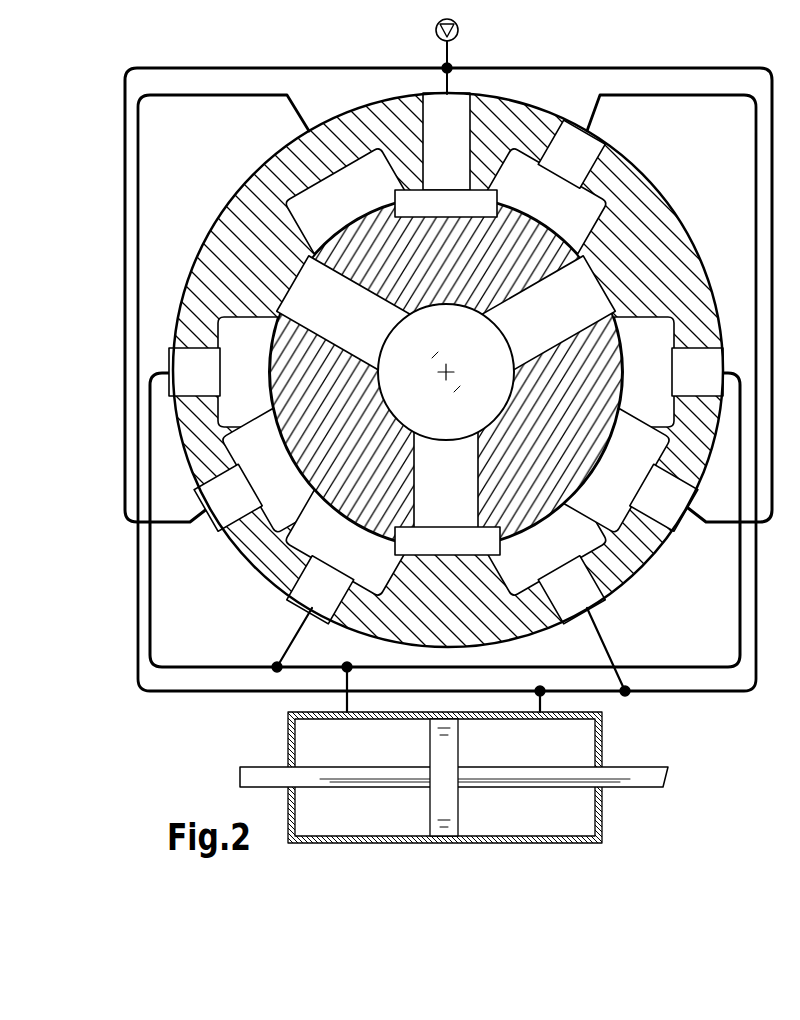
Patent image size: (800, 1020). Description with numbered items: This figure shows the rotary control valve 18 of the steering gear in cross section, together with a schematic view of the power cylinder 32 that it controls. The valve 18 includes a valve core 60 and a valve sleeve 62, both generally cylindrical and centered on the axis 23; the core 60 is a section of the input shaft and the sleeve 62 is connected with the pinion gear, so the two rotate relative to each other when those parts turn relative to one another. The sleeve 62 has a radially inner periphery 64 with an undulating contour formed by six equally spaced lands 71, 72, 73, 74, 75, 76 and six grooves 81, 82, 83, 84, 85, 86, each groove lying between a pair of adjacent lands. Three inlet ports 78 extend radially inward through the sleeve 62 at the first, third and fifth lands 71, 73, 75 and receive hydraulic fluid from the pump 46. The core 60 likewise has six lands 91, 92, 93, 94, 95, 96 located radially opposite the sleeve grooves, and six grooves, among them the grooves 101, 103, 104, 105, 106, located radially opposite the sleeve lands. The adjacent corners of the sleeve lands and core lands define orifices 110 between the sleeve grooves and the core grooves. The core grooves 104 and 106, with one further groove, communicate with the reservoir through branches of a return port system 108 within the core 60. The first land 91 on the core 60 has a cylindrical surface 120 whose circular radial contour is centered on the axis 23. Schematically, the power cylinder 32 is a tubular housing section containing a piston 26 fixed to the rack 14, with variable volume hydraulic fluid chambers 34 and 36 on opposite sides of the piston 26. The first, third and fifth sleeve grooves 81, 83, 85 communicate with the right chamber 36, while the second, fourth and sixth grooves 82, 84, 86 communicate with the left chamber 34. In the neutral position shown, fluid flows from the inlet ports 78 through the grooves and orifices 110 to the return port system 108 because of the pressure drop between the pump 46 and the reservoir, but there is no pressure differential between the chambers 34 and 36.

The rack 14 is at (290, 768).
The valve 18 is at (196, 130).
The axis 23 is at (452, 370).
The piston 26 is at (446, 822).
The power cylinder 32 is at (362, 843).
The hydraulic fluid chamber 34 is at (362, 777).
The hydraulic fluid chamber 36 is at (526, 777).
The pump 46 is at (436, 30).
The valve core 60 is at (277, 213).
The valve sleeve 62 is at (320, 115).
The radially inner periphery 64 is at (350, 178).
The first land 71 is at (513, 175).
The second land 72 is at (613, 283).
The third land 73 is at (655, 555).
The fourth land 74 is at (505, 636).
The fifth land 75 is at (300, 512).
The sixth land 76 is at (282, 288).
The inlet ports 78 is at (460, 90).
The first groove 81 is at (565, 130).
The second groove 82 is at (665, 333).
The third groove 83 is at (590, 562).
The fourth groove 84 is at (300, 545).
The fifth groove 85 is at (237, 410).
The sixth groove 86 is at (425, 140).
The first land 91 is at (567, 190).
The second land 92 is at (628, 370).
The third land 93 is at (580, 610).
The fourth land 94 is at (371, 527).
The fifth land 95 is at (212, 340).
The sixth land 96 is at (290, 172).
The first groove 101 is at (416, 213).
The third groove 103 is at (572, 458).
The fourth groove 104 is at (446, 530).
The fifth groove 105 is at (320, 447).
The sixth groove 106 is at (365, 303).
The return port system 108 is at (446, 372).
The orifices 110 is at (502, 182).
The cylindrical surface 120 is at (598, 300).